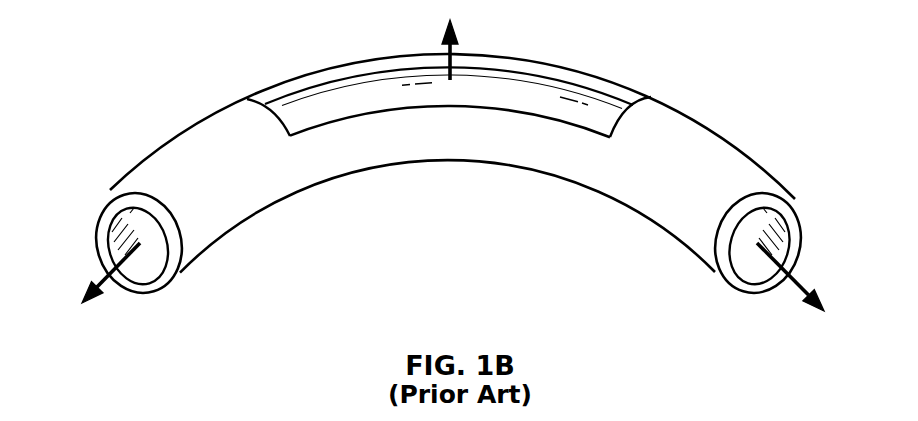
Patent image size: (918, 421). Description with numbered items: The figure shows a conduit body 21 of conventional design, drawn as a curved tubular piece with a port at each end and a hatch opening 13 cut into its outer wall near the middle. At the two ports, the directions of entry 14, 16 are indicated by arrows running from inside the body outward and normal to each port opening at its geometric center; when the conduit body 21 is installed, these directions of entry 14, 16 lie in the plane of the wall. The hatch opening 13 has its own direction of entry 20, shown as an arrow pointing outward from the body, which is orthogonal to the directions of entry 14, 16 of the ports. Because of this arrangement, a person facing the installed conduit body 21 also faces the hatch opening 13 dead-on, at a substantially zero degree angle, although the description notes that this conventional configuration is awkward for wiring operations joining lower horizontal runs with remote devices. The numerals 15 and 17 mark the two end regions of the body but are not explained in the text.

The hatch opening 13 is at (372, 93).
The direction of entry 14 is at (100, 277).
The first tube end 15 is at (118, 300).
The direction of entry 16 is at (800, 297).
The second tube end 17 is at (799, 262).
The direction of entry 20 is at (457, 43).
The conduit body 21 is at (459, 175).